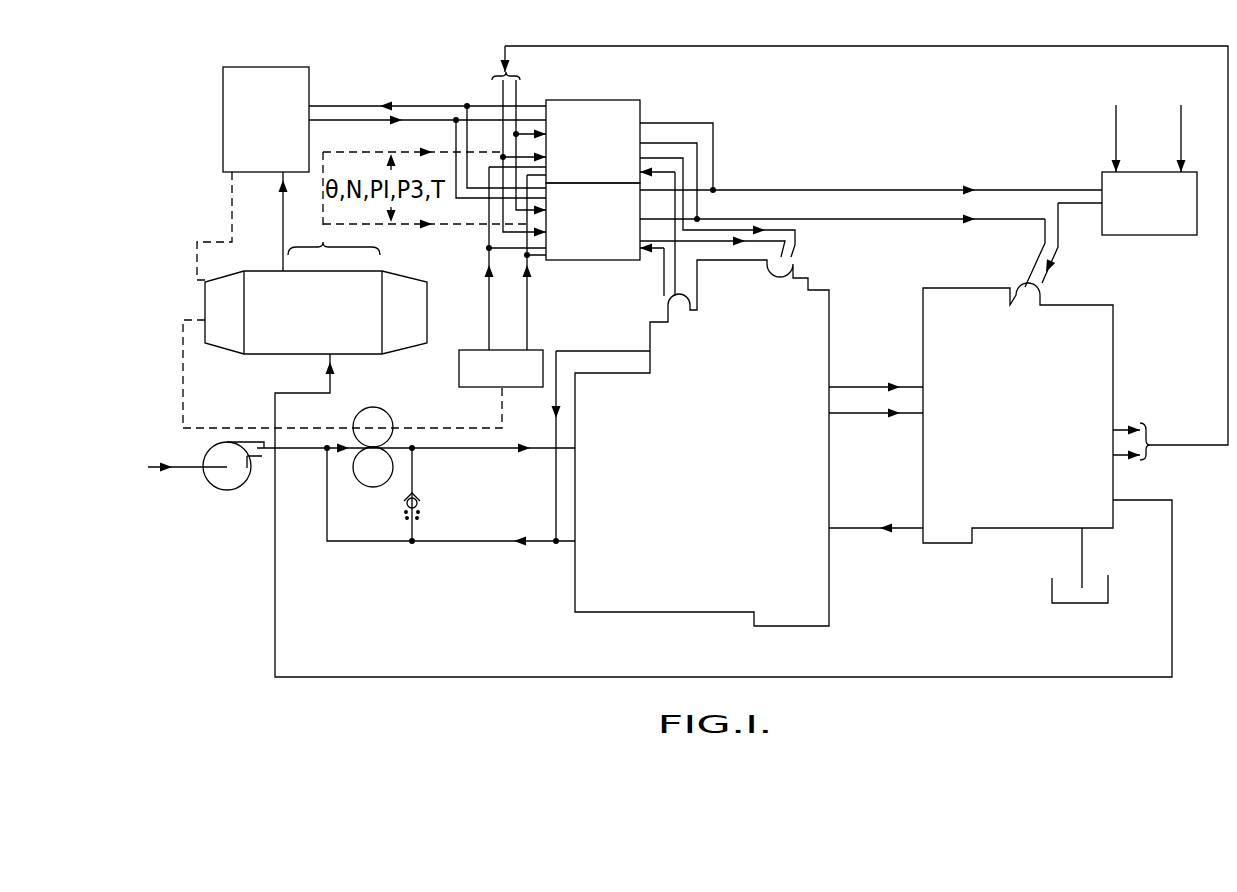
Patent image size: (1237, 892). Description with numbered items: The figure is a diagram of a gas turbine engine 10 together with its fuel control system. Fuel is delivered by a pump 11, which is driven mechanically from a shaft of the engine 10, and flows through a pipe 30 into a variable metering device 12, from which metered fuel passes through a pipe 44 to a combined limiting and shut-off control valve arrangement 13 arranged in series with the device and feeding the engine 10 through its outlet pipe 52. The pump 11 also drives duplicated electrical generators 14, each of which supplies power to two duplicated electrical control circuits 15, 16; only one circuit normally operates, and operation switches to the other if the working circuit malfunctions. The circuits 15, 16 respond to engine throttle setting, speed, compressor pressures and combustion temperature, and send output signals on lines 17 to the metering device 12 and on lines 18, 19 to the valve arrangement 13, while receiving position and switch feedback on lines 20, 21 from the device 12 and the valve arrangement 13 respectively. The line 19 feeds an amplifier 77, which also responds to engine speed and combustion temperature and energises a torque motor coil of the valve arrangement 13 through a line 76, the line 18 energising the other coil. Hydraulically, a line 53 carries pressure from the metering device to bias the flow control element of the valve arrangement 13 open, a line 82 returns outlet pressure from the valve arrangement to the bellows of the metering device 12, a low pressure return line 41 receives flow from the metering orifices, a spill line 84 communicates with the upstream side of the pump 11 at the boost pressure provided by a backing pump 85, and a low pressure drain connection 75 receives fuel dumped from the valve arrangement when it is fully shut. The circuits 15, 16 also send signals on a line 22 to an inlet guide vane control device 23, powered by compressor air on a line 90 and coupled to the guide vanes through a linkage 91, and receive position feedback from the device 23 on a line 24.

The gas turbine engine 10 is at (272, 336).
The pump 11 is at (371, 477).
The variable metering device 12 is at (585, 583).
The combined limiting and shut-off control valve arrangement 13 is at (1015, 508).
The duplicated electrical generators 14 is at (459, 374).
The electrical control circuit 15 is at (620, 108).
The electrical control circuit 16 is at (597, 262).
The lines 17 is at (790, 250).
The line 18 is at (927, 222).
The line 19 is at (912, 187).
The lines 20 is at (672, 296).
The lines 21 is at (1227, 300).
The line 22 is at (332, 103).
The inlet guide vane control device 23 is at (268, 87).
The line 24 is at (430, 115).
The pipe 30 is at (490, 452).
The low pressure return line 41 is at (577, 348).
The pipe 44 is at (866, 416).
The pipe 52 is at (1175, 553).
The line 53 is at (870, 383).
The low pressure drain connection 75 is at (1085, 555).
The line 76 is at (1060, 256).
The amplifier 77 is at (1148, 188).
The line 82 is at (862, 532).
The spill line 84 is at (453, 546).
The backing pump 85 is at (222, 483).
The line 90 is at (281, 222).
The linkage 91 is at (229, 200).